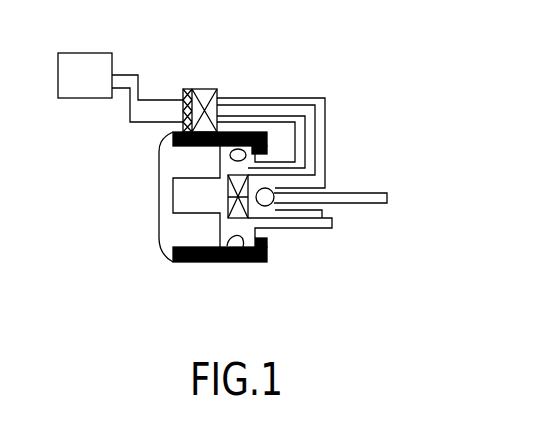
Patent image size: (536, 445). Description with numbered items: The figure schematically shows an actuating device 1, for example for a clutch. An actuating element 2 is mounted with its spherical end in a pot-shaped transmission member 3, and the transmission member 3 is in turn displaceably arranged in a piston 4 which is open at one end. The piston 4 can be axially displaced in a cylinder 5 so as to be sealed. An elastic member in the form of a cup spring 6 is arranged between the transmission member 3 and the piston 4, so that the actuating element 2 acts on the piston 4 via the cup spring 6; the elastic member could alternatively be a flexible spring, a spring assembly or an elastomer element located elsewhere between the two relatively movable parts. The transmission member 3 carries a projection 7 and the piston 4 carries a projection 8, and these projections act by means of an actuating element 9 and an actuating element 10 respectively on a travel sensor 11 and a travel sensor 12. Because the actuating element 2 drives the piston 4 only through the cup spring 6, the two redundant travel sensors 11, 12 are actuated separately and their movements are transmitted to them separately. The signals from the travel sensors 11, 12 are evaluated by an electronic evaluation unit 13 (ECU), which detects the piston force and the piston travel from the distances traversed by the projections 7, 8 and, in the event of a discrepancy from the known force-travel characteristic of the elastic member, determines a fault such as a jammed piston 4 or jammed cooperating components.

The actuating device 1 is at (338, 100).
The actuating element 2 is at (362, 203).
The transmission member 3 is at (272, 208).
The piston 4 is at (221, 262).
The cylinder 5 is at (170, 258).
The cup spring 6 is at (240, 150).
The projection 7 is at (324, 147).
The projection 8 is at (326, 130).
The actuating element 9 is at (268, 121).
The actuating element 10 is at (302, 98).
The travel sensor 11 is at (197, 90).
The travel sensor 12 is at (178, 126).
The electronic evaluation unit 13 is at (75, 65).